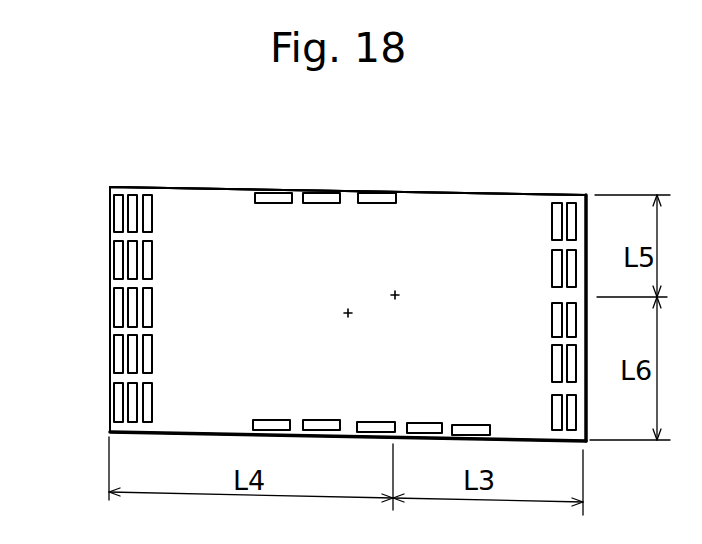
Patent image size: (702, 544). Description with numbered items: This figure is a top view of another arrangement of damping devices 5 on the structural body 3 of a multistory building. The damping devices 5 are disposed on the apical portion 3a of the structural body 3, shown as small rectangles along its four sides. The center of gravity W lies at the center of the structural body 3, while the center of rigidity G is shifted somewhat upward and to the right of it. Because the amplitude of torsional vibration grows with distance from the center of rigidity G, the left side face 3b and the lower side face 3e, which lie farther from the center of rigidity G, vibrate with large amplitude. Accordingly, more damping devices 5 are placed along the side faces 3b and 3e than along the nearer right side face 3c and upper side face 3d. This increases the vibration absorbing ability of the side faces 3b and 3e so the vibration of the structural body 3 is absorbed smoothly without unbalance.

The structural body 3 is at (158, 140).
The apical portion 3a is at (493, 218).
The side face 3b is at (110, 215).
The side face 3c is at (591, 222).
The side face 3d is at (452, 193).
The side face 3e is at (552, 443).
The damping device 5 is at (155, 303).